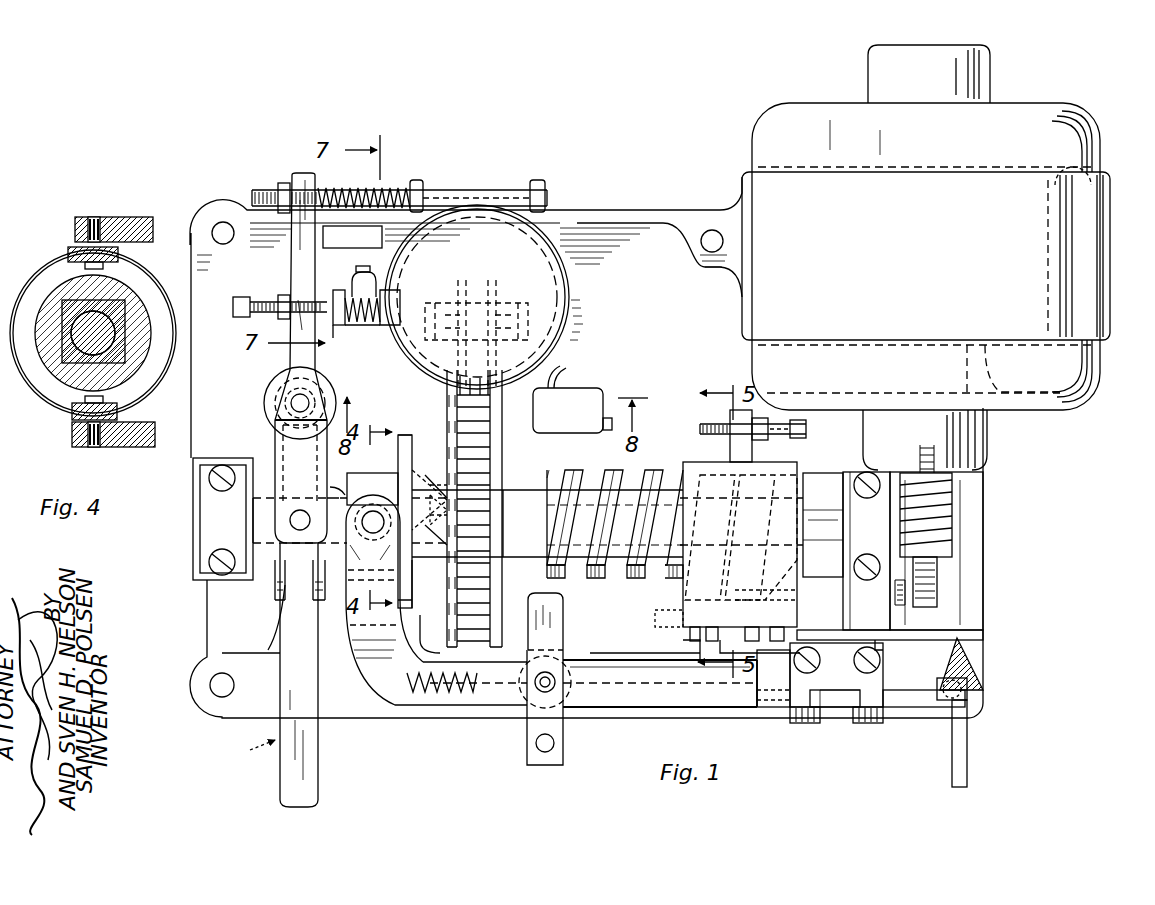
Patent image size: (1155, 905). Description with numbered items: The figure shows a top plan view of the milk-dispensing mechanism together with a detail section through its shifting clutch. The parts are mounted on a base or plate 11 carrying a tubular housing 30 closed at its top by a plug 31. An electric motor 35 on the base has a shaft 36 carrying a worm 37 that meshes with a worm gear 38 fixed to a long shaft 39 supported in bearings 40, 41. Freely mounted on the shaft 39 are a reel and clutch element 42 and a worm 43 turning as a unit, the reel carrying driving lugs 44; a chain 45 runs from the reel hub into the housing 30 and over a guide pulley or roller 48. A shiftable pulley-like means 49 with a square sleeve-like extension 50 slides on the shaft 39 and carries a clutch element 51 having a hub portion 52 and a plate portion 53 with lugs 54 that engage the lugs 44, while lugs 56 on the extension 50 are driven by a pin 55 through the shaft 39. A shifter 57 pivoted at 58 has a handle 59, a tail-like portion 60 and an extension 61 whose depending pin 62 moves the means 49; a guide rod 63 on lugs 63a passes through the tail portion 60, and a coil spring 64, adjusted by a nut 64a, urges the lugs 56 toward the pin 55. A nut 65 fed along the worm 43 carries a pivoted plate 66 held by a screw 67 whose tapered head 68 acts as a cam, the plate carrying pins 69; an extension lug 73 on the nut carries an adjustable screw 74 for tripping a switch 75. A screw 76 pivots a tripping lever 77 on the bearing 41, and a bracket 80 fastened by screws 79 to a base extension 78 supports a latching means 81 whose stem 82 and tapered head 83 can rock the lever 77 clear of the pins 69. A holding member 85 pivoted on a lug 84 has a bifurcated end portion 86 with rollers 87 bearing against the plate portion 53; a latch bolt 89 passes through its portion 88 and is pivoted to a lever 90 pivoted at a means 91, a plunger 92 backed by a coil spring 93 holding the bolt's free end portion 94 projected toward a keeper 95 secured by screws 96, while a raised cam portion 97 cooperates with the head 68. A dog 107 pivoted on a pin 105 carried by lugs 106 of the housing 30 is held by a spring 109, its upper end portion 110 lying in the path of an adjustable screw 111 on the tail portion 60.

In FIG. 1, the base or plate 11 is at (672, 184).
In FIG. 1, the tubular housing 30 is at (574, 278).
In FIG. 1, the plug 31 is at (502, 265).
In FIG. 1, the electric motor 35 is at (1112, 267).
In FIG. 1, the motor shaft 36 is at (983, 485).
In FIG. 1, the worm 37 is at (940, 546).
In FIG. 1, the worm gear 38 is at (938, 592).
In FIG. 4, the shaft 39 is at (66, 378).
In FIG. 1, the shaft 39 is at (262, 560).
In FIG. 1, the bearing 40 is at (232, 470).
In FIG. 1, the bearing 41 is at (852, 472).
In FIG. 1, the reel and clutch element 42 is at (503, 440).
In FIG. 1, the worm 43 is at (612, 470).
In FIG. 1, the driving lugs 44 is at (420, 608).
In FIG. 1, the chain 45 is at (492, 388).
In FIG. 1, the guide pulley or roller 48 is at (497, 312).
In FIG. 1, the shiftable pulley-like means 49 is at (264, 624).
In FIG. 4, the sleeve-like extension 50 is at (112, 352).
In FIG. 1, the sleeve-like extension 50 is at (342, 477).
In FIG. 4, the clutch element 51 is at (162, 282).
In FIG. 1, the clutch element 51 is at (402, 435).
In FIG. 4, the hub portion 52 is at (132, 320).
In FIG. 1, the hub portion 52 is at (388, 452).
In FIG. 4, the plate portion 53 is at (165, 265).
In FIG. 1, the plate portion 53 is at (412, 442).
In FIG. 1, the lugs 54 is at (418, 476).
In FIG. 1, the pin 55 is at (440, 520).
In FIG. 1, the lugs 56 is at (450, 495).
In FIG. 1, the shifter 57 is at (245, 748).
In FIG. 1, the pivot 58 is at (290, 408).
In FIG. 1, the operating part or handle 59 is at (318, 785).
In FIG. 1, the tail-like portion 60 is at (305, 175).
In FIG. 1, the extension 61 is at (278, 480).
In FIG. 1, the depending pin 62 is at (300, 560).
In FIG. 1, the guide rod 63 is at (266, 190).
In FIG. 1, the lugs 63a is at (532, 184).
In FIG. 1, the coil spring 64 is at (415, 182).
In FIG. 1, the nut 64a is at (284, 185).
In FIG. 1, the nut 65 is at (700, 462).
In FIG. 1, the plate 66 is at (672, 610).
In FIG. 1, the screw 67 is at (750, 600).
In FIG. 1, the bevelled or tapered head 68 is at (762, 700).
In FIG. 1, the pins 69 is at (707, 627).
In FIG. 1, the extension lug 73 is at (735, 415).
In FIG. 1, the adjustable screw 74 is at (708, 426).
In FIG. 1, the switch 75 is at (585, 390).
In FIG. 1, the screw 76 is at (880, 652).
In FIG. 1, the tripping lever 77 is at (950, 636).
In FIG. 1, the base extension 78 is at (850, 690).
In FIG. 1, the screws 79 is at (807, 673).
In FIG. 1, the bracket 80 is at (920, 708).
In FIG. 1, the latching means 81 is at (990, 695).
In FIG. 1, the stem 82 is at (967, 748).
In FIG. 1, the cone-shaped or tapered head 83 is at (968, 662).
In FIG. 1, the lug 84 is at (560, 652).
In FIG. 1, the member 85 is at (490, 705).
In FIG. 4, the bifurcated end portion 86 is at (118, 218).
In FIG. 1, the bifurcated end portion 86 is at (355, 640).
In FIG. 4, the rollers 87 is at (76, 252).
In FIG. 1, the rollers 87 is at (362, 580).
In FIG. 1, the portion 88 is at (660, 708).
In FIG. 1, the latch bolt 89 is at (605, 708).
In FIG. 1, the short operating lever 90 is at (550, 603).
In FIG. 1, the pivot means 91 is at (545, 753).
In FIG. 1, the plunger 92 is at (530, 705).
In FIG. 1, the coil spring 93 is at (438, 695).
In FIG. 1, the free end portion 94 is at (782, 708).
In FIG. 1, the keeper 95 is at (835, 708).
In FIG. 1, the screws 96 is at (800, 724).
In FIG. 1, the cam-like or raised portion 97 is at (692, 660).
In FIG. 1, the pin 105 is at (378, 330).
In FIG. 1, the lugs 106 is at (392, 290).
In FIG. 1, the dog 107 is at (352, 290).
In FIG. 1, the spring 109 is at (352, 326).
In FIG. 1, the upper end portion 110 is at (335, 338).
In FIG. 1, the adjustable screw 111 is at (252, 316).